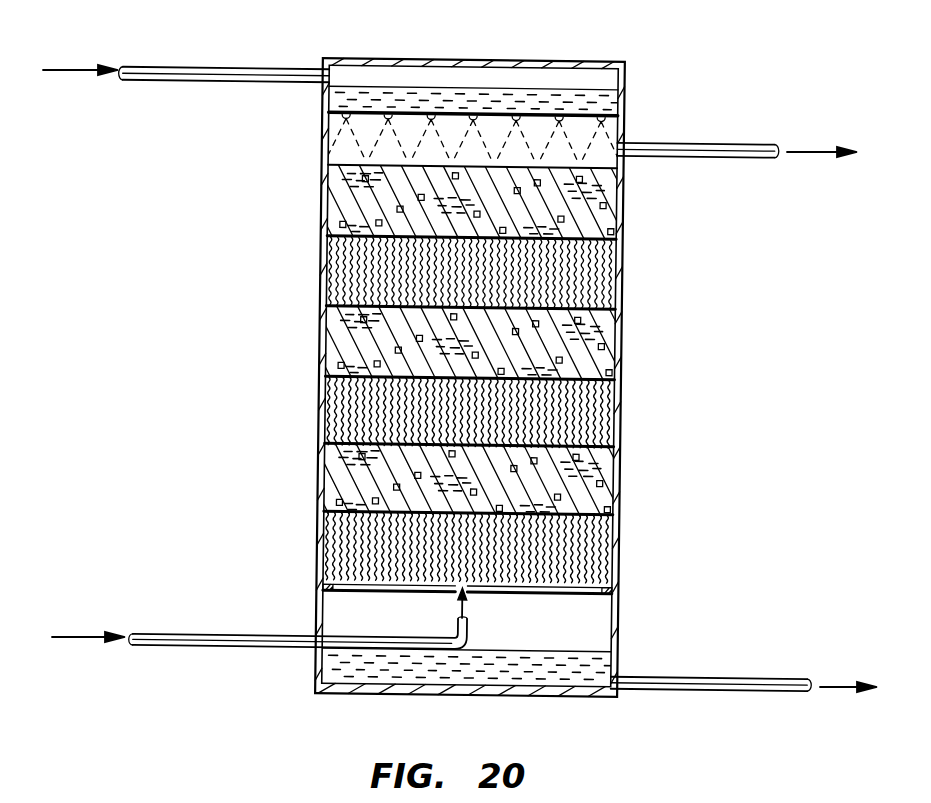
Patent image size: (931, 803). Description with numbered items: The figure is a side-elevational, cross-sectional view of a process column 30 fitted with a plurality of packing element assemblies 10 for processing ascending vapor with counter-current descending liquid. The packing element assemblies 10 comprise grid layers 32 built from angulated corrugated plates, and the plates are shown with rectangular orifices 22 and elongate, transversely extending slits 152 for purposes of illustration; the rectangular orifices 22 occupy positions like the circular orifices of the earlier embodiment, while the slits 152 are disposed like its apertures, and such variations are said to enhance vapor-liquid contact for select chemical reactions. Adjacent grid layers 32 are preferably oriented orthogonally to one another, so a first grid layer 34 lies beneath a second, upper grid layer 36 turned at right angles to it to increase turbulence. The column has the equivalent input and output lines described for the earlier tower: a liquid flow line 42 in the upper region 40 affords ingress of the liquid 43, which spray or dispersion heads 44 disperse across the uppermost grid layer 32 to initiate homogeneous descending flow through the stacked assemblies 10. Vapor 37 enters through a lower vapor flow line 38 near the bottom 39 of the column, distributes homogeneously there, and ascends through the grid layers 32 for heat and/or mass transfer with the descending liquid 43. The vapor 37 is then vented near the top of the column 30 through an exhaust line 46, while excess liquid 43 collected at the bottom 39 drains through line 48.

The packing element assemblies 10 is at (600, 288).
The elongate slits 152 is at (606, 180).
The rectangular orifices 22 is at (577, 210).
The process column 30 is at (608, 130).
The grid layers 32 is at (603, 427).
The first grid layer 34 is at (337, 540).
The second, upper grid layer 36 is at (345, 473).
The vapor 37 is at (467, 612).
The lower vapor flow line 38 is at (197, 636).
The bottom 39 is at (590, 677).
The upper region 40 is at (603, 82).
The liquid flow line 42 is at (217, 68).
The liquid 43 is at (510, 98).
The spray or dispersion heads 44 is at (427, 116).
The exhaust line 46 is at (717, 145).
The drain line 48 is at (725, 678).